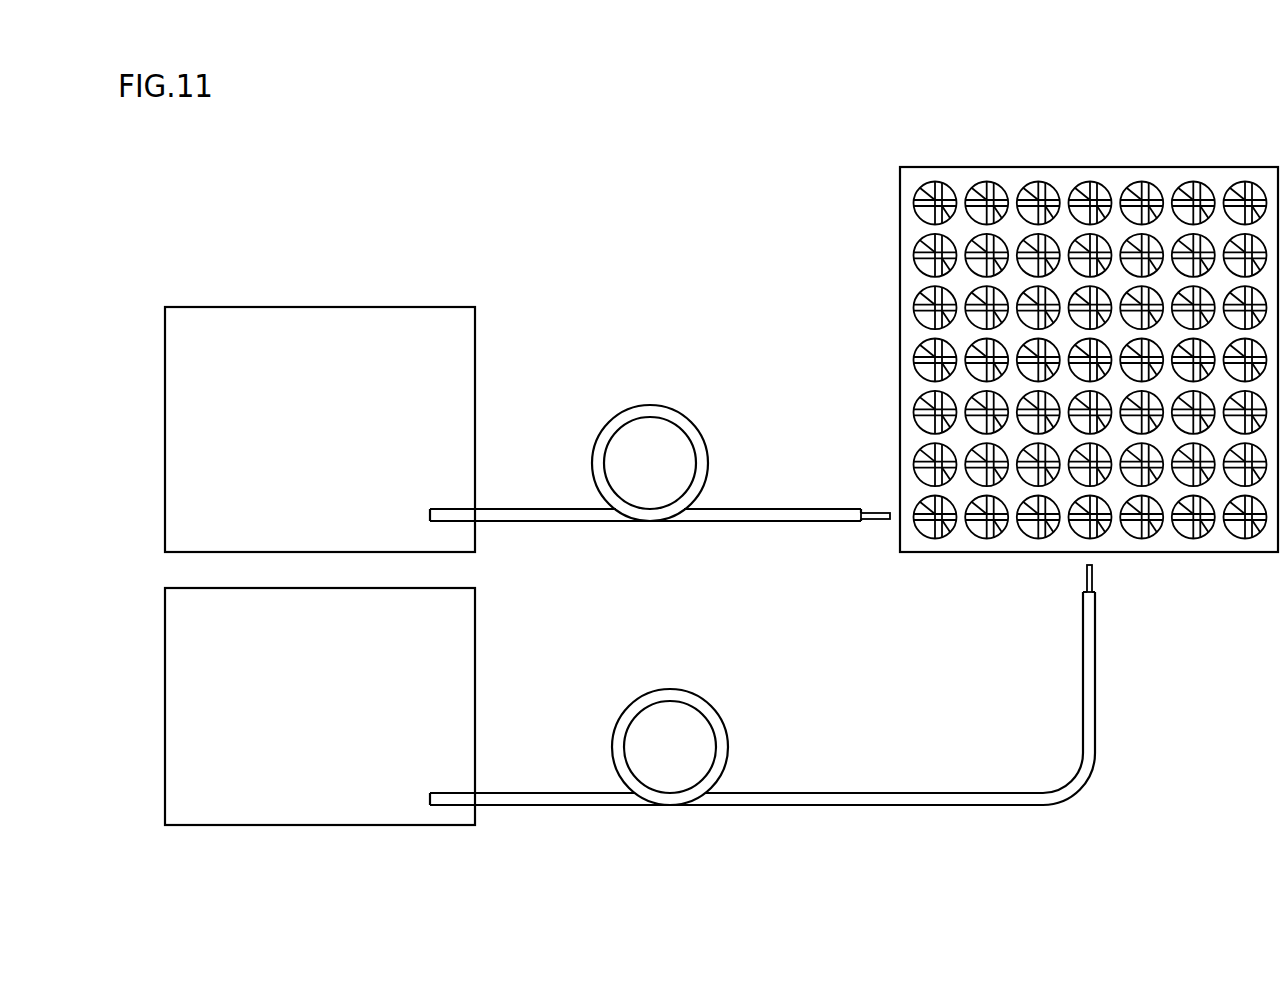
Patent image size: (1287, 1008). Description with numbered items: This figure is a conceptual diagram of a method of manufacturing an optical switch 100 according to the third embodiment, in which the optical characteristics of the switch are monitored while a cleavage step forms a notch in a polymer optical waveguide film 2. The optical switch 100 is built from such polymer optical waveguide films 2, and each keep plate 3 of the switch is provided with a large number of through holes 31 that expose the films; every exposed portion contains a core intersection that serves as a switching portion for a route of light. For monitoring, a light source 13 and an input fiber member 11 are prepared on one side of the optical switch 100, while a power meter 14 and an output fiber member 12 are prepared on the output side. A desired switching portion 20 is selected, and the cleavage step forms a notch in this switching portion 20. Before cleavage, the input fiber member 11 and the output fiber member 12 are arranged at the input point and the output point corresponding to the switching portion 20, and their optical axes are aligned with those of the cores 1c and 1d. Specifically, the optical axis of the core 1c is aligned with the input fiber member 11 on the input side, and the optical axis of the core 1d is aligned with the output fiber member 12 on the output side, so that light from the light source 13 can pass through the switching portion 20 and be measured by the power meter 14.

The optical switch 100 is at (1089, 393).
The polymer optical waveguide film 2 is at (1255, 192).
The keep plate 3 is at (1173, 180).
The through hole 31 is at (1223, 190).
The switching portion 20 is at (1080, 528).
The input fiber member 11 is at (676, 489).
The output fiber member 12 is at (783, 667).
The core 1c is at (922, 513).
The core 1d is at (1100, 530).
The light source 13 is at (428, 323).
The power meter 14 is at (346, 808).